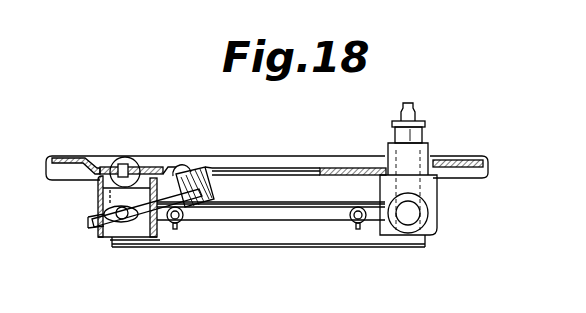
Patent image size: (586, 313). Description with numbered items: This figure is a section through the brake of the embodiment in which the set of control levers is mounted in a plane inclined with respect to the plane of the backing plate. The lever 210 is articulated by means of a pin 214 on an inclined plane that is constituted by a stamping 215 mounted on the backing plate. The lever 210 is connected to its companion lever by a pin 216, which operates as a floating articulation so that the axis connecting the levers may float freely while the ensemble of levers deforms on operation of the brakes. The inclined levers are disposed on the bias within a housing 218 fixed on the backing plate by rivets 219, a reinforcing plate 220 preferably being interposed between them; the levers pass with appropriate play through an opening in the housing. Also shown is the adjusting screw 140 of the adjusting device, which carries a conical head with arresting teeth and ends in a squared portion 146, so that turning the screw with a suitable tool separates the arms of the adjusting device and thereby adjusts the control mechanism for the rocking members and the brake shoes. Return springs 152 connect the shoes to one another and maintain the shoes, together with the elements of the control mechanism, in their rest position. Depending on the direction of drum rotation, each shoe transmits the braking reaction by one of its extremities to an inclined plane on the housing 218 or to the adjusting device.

The adjusting screw 140 is at (430, 138).
The squared portion 146 is at (413, 108).
The return springs 152 is at (182, 224).
The lever 210 is at (141, 222).
The pin 214 is at (204, 170).
The stamping 215 is at (213, 168).
The pin 216 is at (90, 217).
The housing 218 is at (97, 189).
The rivets 219 is at (122, 158).
The reinforcing plate 220 is at (147, 163).